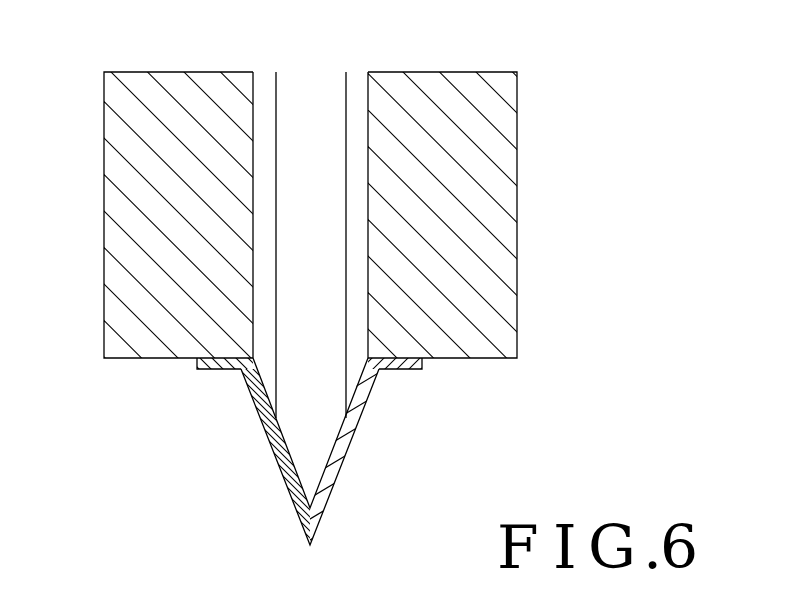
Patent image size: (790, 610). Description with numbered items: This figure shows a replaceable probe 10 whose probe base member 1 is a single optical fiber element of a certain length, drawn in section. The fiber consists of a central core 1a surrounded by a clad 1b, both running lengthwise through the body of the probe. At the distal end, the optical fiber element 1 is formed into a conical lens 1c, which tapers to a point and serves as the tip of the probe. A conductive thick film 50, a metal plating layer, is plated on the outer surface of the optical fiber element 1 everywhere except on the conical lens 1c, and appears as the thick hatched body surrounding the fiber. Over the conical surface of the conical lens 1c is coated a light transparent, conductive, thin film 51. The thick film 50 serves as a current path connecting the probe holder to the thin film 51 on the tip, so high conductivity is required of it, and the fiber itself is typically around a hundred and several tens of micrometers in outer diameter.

The probe base member 1 is at (231, 254).
The core 1a is at (302, 217).
The clad 1b is at (263, 167).
The conical lens 1c is at (313, 440).
The probe 10 is at (395, 305).
The conductive thick film 50 is at (457, 190).
The light transparent, conductive, thin film 51 is at (276, 468).